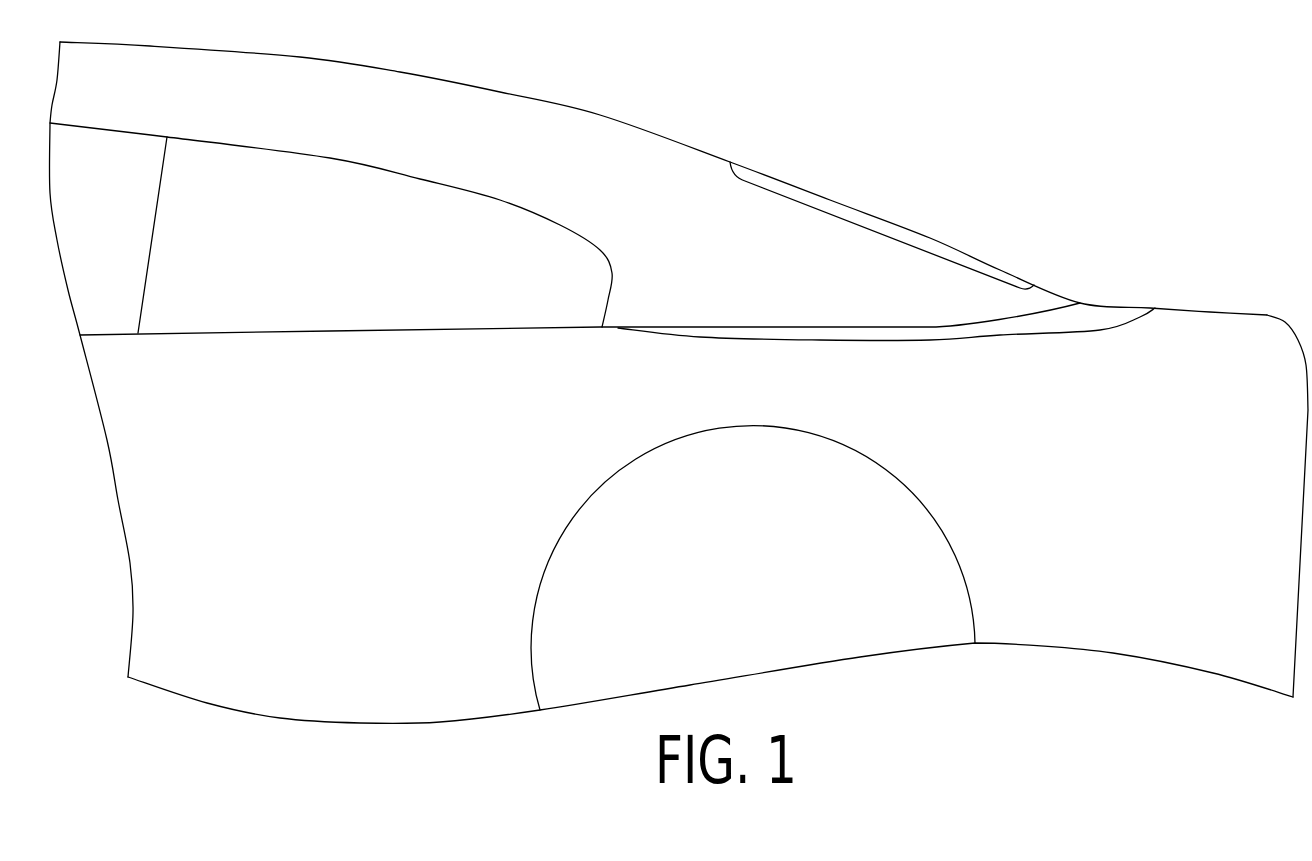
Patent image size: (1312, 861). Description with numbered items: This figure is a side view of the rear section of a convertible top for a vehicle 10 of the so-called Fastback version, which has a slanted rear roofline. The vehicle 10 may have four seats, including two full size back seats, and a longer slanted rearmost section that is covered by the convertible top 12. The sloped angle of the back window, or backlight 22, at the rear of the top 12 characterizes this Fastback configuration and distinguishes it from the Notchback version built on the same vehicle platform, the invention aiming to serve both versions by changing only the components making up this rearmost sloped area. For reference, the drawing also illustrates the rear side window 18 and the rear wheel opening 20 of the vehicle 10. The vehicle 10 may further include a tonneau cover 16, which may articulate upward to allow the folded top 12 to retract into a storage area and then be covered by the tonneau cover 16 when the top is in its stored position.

The vehicle 10 is at (1230, 244).
The convertible top 12 is at (488, 135).
The tonneau cover 16 is at (1102, 317).
The rear side window 18 is at (302, 282).
The rear wheel opening 20 is at (759, 587).
The backlight 22 is at (872, 223).